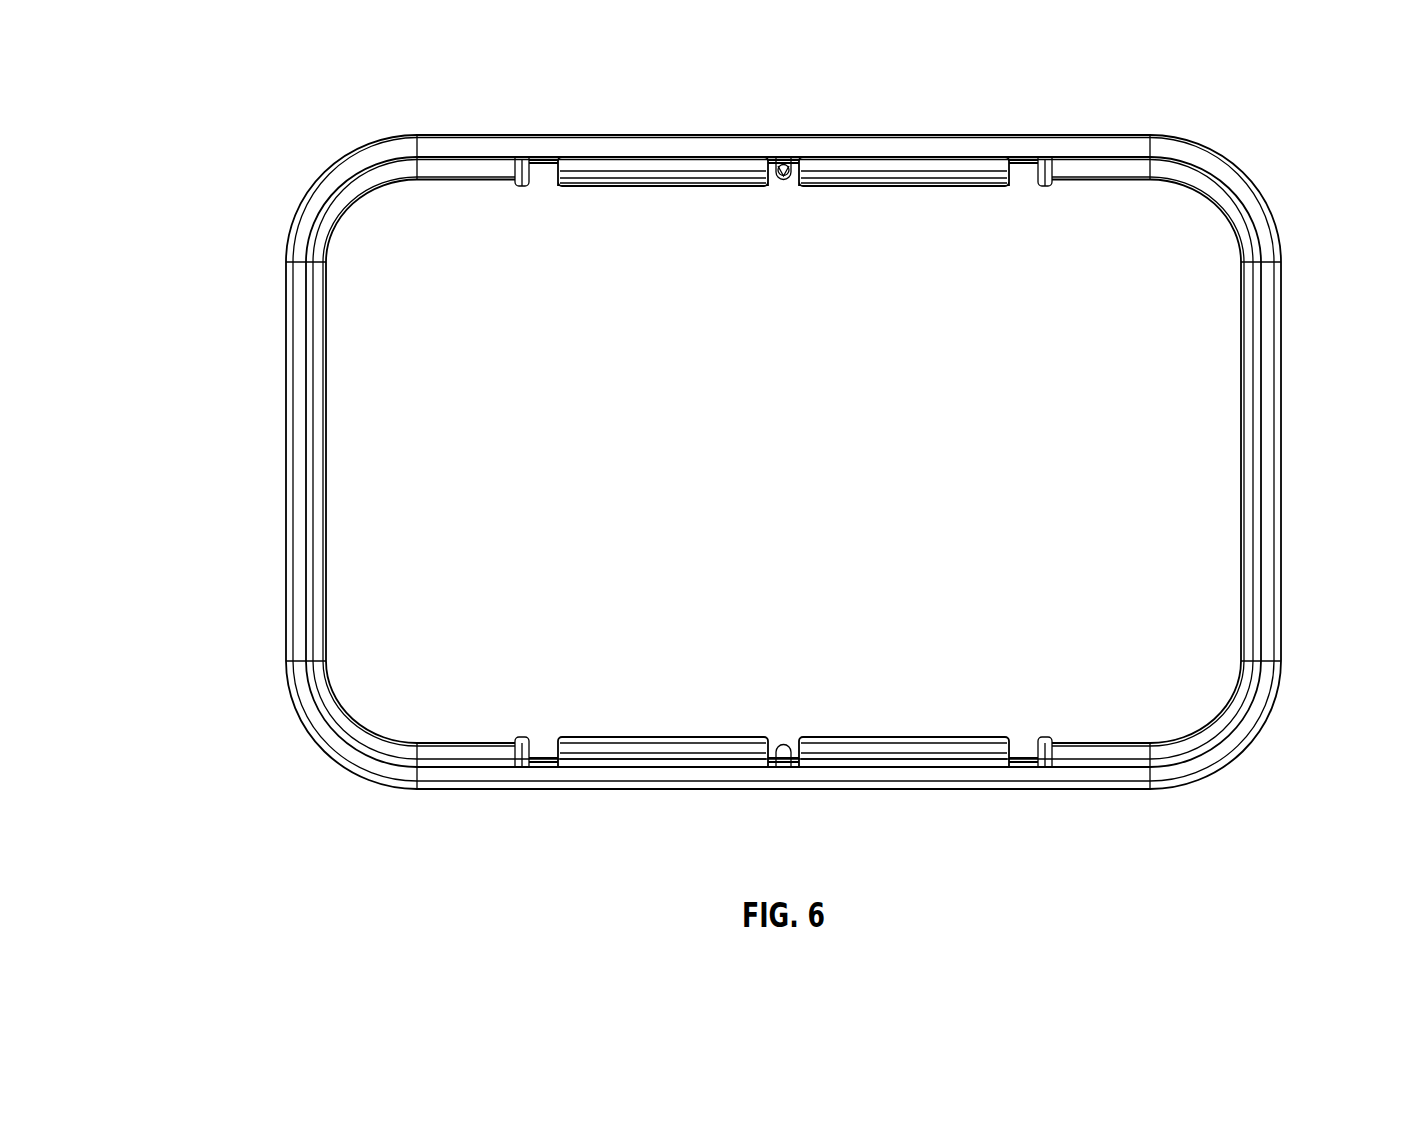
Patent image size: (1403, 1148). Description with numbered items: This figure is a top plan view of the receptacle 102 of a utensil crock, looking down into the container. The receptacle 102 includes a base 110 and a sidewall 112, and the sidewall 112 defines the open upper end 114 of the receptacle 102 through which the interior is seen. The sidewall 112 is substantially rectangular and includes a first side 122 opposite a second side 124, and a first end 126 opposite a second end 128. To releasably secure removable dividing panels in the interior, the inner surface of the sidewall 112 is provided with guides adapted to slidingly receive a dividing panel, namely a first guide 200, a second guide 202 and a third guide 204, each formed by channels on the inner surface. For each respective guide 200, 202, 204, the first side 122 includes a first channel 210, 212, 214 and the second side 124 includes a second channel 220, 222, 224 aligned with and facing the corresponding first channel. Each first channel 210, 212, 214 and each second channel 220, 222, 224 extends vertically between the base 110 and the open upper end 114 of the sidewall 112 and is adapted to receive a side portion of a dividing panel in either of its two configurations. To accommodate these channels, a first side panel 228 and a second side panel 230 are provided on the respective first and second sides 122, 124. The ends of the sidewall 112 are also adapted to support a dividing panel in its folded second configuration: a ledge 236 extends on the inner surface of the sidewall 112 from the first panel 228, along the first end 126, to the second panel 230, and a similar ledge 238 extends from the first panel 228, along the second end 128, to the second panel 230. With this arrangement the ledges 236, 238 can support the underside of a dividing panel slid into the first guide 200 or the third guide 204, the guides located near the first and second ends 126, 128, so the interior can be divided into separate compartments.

The receptacle 102 is at (978, 136).
The base 110 is at (1213, 352).
The sidewall 112 is at (722, 136).
The open upper end 114 is at (1247, 557).
The first side 122 is at (900, 136).
The second side 124 is at (935, 790).
The first end 126 is at (283, 481).
The second end 128 is at (1282, 462).
The first guide 200 is at (556, 188).
The second guide 202 is at (790, 182).
The third guide 204 is at (1050, 190).
The first channel 210 is at (545, 158).
The first channel 212 is at (790, 156).
The first channel 214 is at (1033, 160).
The second channel 220 is at (542, 766).
The second channel 222 is at (783, 766).
The second channel 224 is at (1038, 766).
The first side panel 228 is at (677, 188).
The second side panel 230 is at (675, 735).
The ledge 236 is at (328, 513).
The ledge 238 is at (1240, 463).